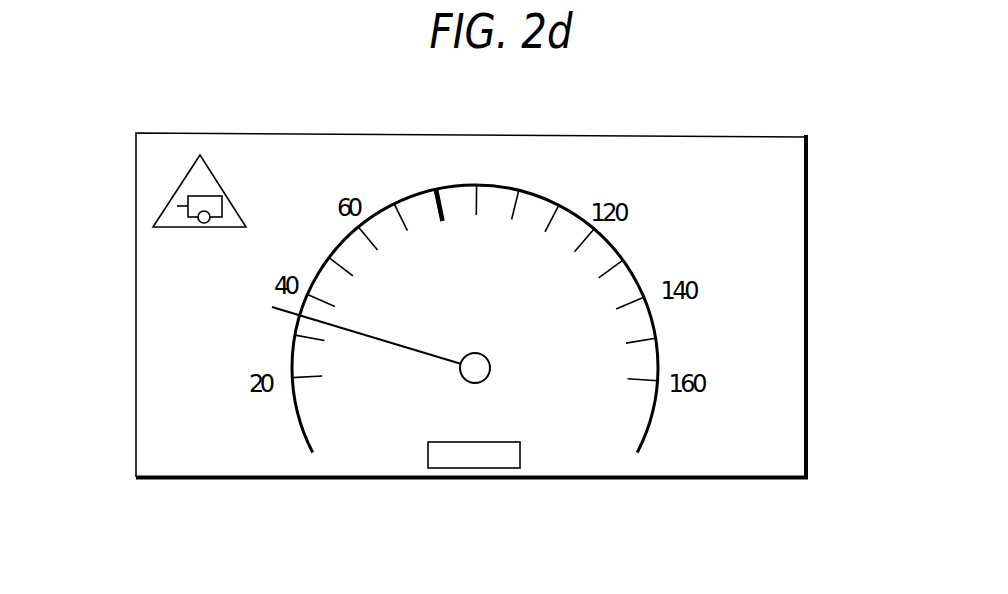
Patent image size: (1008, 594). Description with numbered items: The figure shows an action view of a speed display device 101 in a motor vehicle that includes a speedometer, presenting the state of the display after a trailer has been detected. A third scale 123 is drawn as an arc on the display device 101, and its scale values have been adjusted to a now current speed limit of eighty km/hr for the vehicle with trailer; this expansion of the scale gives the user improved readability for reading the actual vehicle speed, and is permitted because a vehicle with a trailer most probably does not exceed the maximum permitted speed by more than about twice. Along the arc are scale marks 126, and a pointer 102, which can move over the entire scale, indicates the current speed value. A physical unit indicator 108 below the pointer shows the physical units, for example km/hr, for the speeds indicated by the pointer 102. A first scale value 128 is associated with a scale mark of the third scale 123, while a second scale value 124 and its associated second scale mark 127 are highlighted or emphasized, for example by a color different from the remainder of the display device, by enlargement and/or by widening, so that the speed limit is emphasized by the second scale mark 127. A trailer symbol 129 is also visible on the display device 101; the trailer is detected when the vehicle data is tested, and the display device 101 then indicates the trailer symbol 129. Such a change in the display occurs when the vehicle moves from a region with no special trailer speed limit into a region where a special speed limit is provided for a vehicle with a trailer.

The speed display device 101 is at (812, 318).
The pointer 102 is at (397, 343).
The physical unit indicator 108 is at (487, 468).
The third scale 123 is at (272, 308).
The second scale value 124 is at (437, 153).
The scale tick marks 126 is at (313, 384).
The second scale mark 127 is at (442, 201).
The first scale value 128 is at (548, 168).
The trailer symbol 129 is at (170, 202).